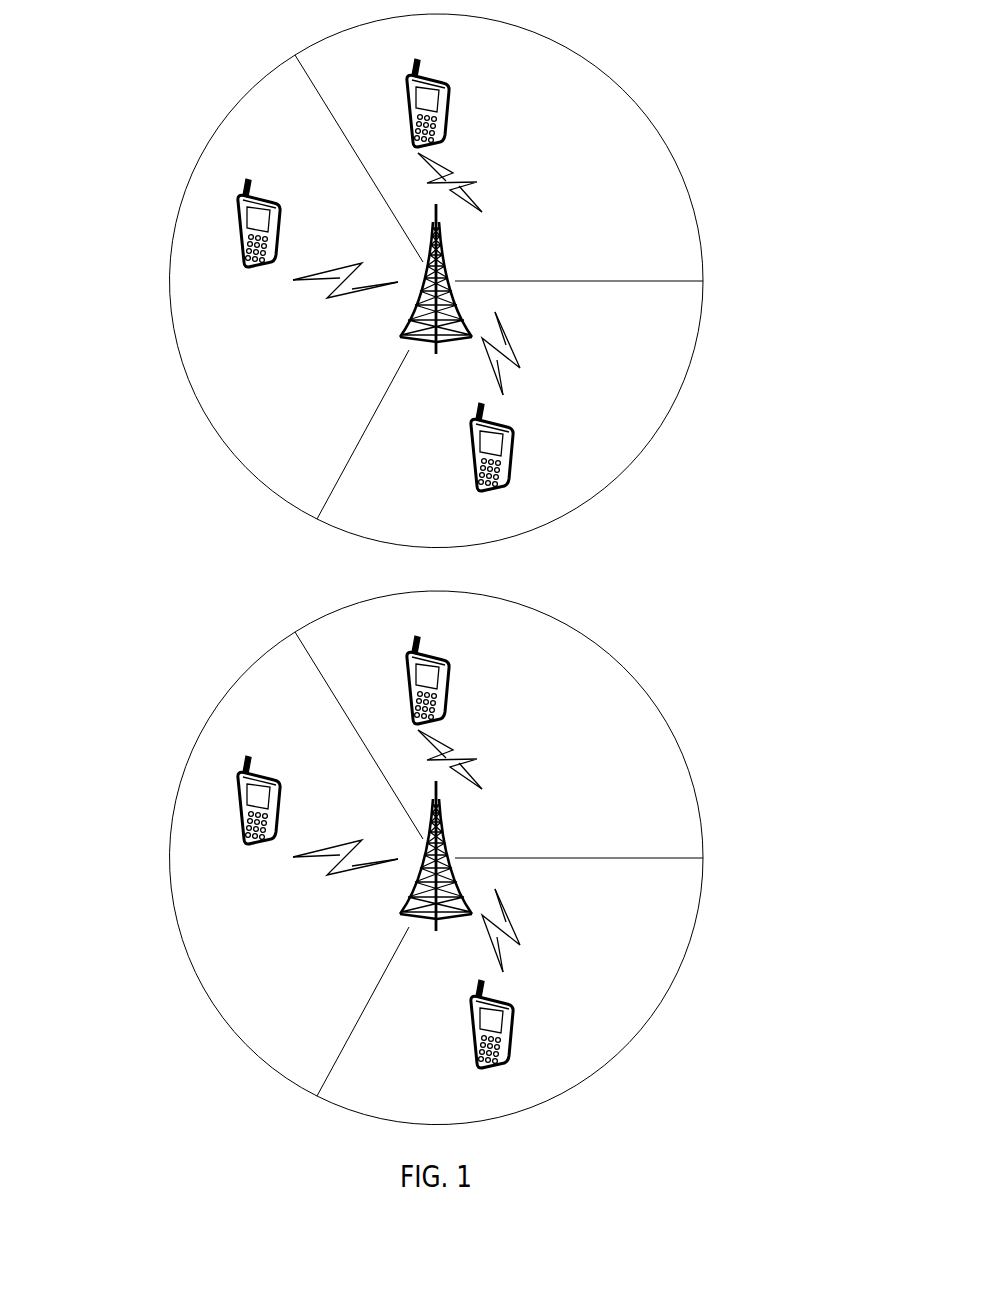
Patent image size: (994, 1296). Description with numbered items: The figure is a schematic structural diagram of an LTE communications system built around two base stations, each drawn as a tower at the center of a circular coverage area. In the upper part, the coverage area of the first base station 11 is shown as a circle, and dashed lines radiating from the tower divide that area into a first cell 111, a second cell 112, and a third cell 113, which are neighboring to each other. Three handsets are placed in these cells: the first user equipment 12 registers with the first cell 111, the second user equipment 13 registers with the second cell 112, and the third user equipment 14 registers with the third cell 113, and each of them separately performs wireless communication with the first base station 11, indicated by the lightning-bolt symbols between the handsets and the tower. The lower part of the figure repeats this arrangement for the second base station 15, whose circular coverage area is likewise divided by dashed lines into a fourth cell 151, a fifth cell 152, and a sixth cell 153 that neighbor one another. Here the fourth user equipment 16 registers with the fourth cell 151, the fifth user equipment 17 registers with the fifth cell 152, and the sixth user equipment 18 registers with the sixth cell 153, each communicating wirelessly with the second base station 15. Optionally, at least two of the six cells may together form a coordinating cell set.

The first base station 11 is at (445, 257).
The first user equipment 12 is at (433, 132).
The second user equipment 13 is at (262, 260).
The third user equipment 14 is at (515, 470).
The first cell 111 is at (614, 150).
The second cell 112 is at (270, 181).
The third cell 113 is at (614, 426).
The second base station 15 is at (445, 834).
The fourth user equipment 16 is at (433, 709).
The fifth user equipment 17 is at (262, 837).
The sixth user equipment 18 is at (515, 1047).
The fourth cell 151 is at (614, 727).
The fifth cell 152 is at (270, 758).
The sixth cell 153 is at (614, 1003).